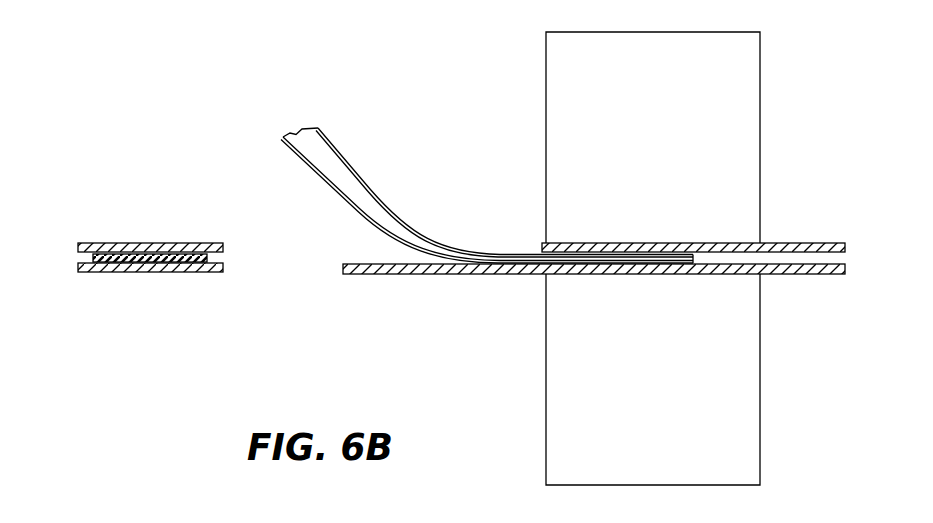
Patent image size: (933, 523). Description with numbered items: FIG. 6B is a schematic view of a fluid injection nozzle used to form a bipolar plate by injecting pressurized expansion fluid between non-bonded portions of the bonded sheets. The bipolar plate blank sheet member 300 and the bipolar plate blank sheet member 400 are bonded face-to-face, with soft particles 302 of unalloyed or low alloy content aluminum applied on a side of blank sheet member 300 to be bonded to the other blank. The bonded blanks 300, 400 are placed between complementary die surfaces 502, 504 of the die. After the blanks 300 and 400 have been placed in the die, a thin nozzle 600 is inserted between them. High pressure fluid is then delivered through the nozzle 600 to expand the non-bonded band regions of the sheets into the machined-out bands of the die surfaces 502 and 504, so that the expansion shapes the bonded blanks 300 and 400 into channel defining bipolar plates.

The bipolar plate blank sheet member 300 is at (793, 244).
The soft particles 302 is at (92, 258).
The bipolar plate blank sheet member 400 is at (793, 274).
The die surface 502 is at (742, 165).
The die surface 504 is at (742, 398).
The nozzle 600 is at (390, 208).